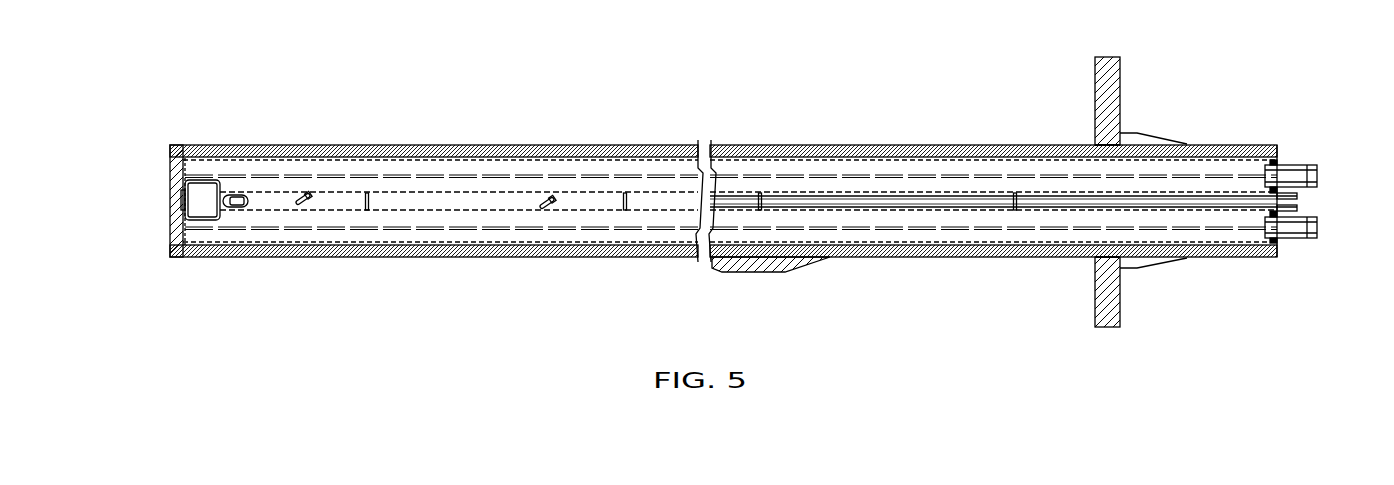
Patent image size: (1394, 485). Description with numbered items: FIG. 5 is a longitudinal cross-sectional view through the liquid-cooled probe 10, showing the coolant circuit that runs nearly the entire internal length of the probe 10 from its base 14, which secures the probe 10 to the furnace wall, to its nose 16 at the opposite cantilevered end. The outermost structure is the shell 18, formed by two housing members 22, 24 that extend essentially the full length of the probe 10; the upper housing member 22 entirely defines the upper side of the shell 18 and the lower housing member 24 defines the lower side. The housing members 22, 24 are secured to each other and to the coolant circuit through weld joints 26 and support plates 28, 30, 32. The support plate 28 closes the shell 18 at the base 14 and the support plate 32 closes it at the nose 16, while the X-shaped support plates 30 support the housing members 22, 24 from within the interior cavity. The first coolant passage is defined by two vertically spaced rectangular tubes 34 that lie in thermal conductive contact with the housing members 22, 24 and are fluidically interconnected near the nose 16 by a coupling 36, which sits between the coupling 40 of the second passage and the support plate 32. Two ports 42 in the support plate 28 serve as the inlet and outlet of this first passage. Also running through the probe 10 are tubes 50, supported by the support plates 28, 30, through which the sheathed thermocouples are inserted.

The probe 10 is at (846, 71).
The base 14 is at (1105, 75).
The nose 16 is at (170, 178).
The shell 18 is at (492, 143).
The housing member 22 is at (968, 148).
The housing member 24 is at (977, 257).
The weld joints 26 is at (1093, 258).
The support plate 28 is at (1278, 162).
The support plates 30 is at (367, 200).
The support plate 32 is at (173, 223).
The tubes 34 is at (412, 168).
The coupling 36 is at (207, 180).
The coupling 40 is at (243, 210).
The ports 42 is at (1318, 234).
The tubes 50 is at (852, 207).